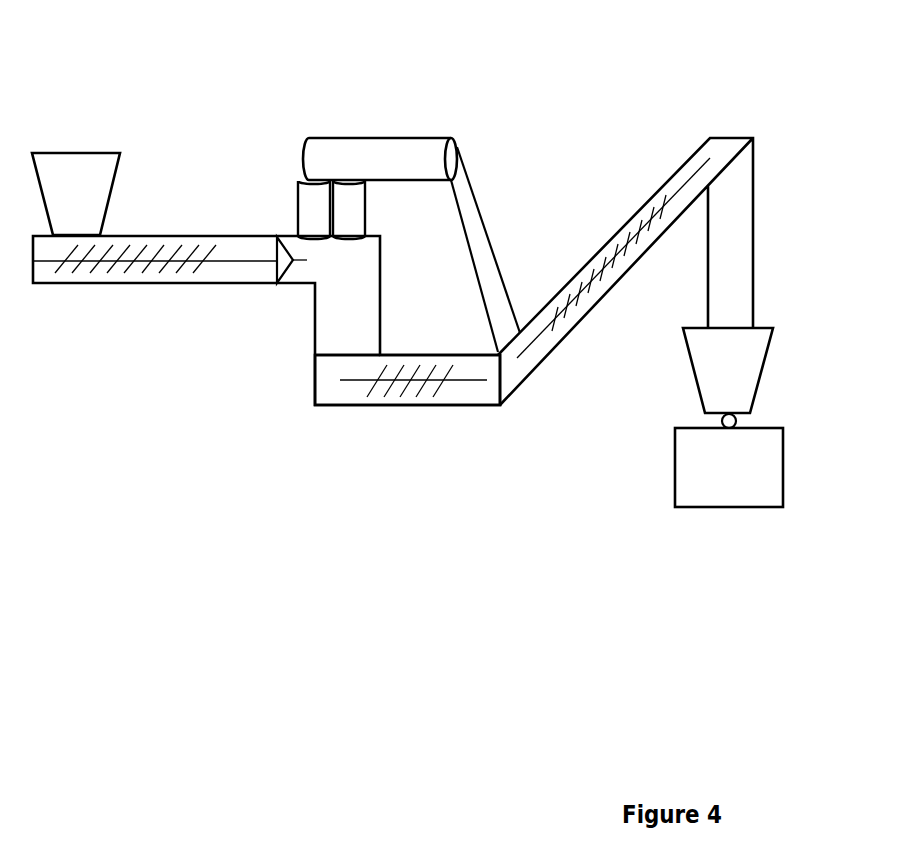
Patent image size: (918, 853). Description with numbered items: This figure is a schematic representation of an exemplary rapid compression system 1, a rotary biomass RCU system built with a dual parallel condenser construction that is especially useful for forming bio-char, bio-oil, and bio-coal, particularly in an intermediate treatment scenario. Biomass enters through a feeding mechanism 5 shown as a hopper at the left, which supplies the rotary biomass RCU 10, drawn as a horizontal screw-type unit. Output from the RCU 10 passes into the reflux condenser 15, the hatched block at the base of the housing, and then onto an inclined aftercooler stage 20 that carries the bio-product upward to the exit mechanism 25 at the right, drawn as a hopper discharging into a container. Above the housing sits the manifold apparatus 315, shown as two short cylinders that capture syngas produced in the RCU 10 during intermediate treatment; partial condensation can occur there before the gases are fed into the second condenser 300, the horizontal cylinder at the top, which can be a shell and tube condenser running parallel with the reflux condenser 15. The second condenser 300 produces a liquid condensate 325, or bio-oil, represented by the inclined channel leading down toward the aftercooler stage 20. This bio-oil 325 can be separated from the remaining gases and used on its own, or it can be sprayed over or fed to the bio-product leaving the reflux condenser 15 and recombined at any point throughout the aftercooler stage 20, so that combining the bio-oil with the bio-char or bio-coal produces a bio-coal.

The rapid compression system 1 is at (242, 90).
The feeding mechanism 5 is at (81, 146).
The rotary biomass RCU 10 is at (170, 299).
The reflux condenser 15 is at (442, 419).
The aftercooler stage 20 is at (595, 320).
The exit mechanism 25 is at (772, 365).
The second condenser 300 is at (447, 128).
The manifold apparatus 315 is at (291, 204).
The liquid condensate 325 is at (502, 242).